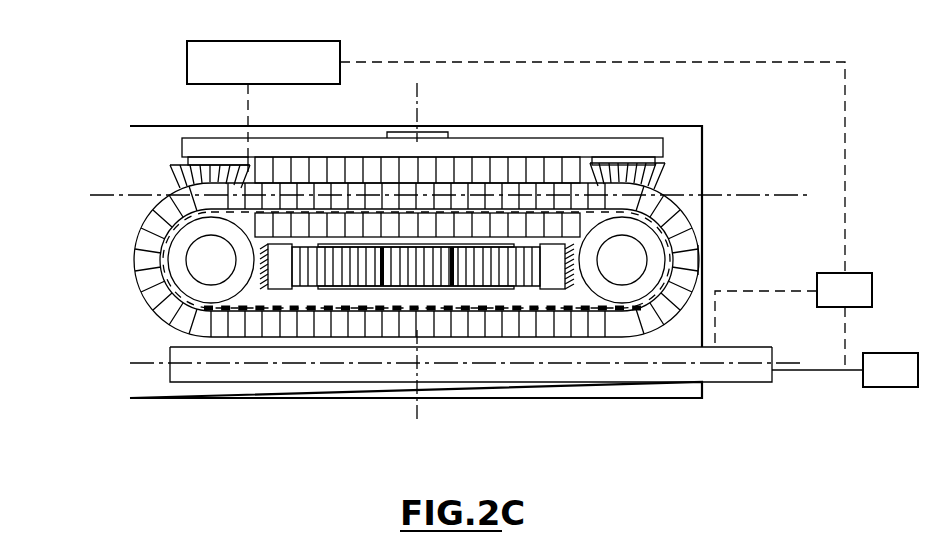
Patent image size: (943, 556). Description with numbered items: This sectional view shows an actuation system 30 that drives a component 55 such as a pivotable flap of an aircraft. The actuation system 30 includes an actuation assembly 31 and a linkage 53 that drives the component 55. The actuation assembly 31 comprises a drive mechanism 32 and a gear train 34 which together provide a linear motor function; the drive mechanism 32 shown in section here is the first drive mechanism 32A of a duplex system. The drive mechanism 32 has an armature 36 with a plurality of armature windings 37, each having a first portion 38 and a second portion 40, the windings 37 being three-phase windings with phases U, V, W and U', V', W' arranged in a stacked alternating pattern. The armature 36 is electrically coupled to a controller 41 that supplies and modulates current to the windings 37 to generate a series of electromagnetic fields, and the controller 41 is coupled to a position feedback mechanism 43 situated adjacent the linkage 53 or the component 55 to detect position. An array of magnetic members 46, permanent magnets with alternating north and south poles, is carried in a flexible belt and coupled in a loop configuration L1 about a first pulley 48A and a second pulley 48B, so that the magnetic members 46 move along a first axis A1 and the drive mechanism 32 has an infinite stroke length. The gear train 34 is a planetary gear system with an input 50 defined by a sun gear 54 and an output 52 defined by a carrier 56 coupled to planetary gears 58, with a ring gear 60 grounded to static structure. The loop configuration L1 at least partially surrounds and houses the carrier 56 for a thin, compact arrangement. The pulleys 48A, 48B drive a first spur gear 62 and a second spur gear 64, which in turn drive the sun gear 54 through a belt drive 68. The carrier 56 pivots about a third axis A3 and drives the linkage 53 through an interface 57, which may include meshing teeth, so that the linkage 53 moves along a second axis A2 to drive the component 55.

The actuation system 30 is at (82, 66).
The actuation assembly 31 is at (167, 97).
The drive mechanism 32 is at (491, 210).
The first drive mechanism 32A is at (740, 172).
The gear train 34 is at (507, 310).
The armature 36 is at (538, 150).
The armature windings 37 is at (416, 214).
The first portion 38 is at (605, 183).
The second portion 40 is at (573, 240).
The controller 41 is at (340, 50).
The position feedback mechanism 43 is at (830, 303).
The magnetic members 46 is at (600, 165).
The first pulley 48A is at (178, 272).
The second pulley 48B is at (700, 277).
The input 50 is at (417, 394).
The output 52 is at (418, 336).
The linkage 53 is at (733, 352).
The sun gear 54 is at (450, 341).
The component 55 is at (876, 383).
The carrier 56 is at (447, 270).
The interface 57 is at (386, 362).
The planetary gears 58 is at (312, 278).
The ring gear 60 is at (275, 281).
The first spur gear 62 is at (172, 173).
The second spur gear 64 is at (665, 178).
The belt drive 68 is at (470, 138).
The first axis A1 is at (786, 195).
The second axis A2 is at (782, 363).
The third axis A3 is at (417, 412).
The loop configuration L1 is at (708, 234).